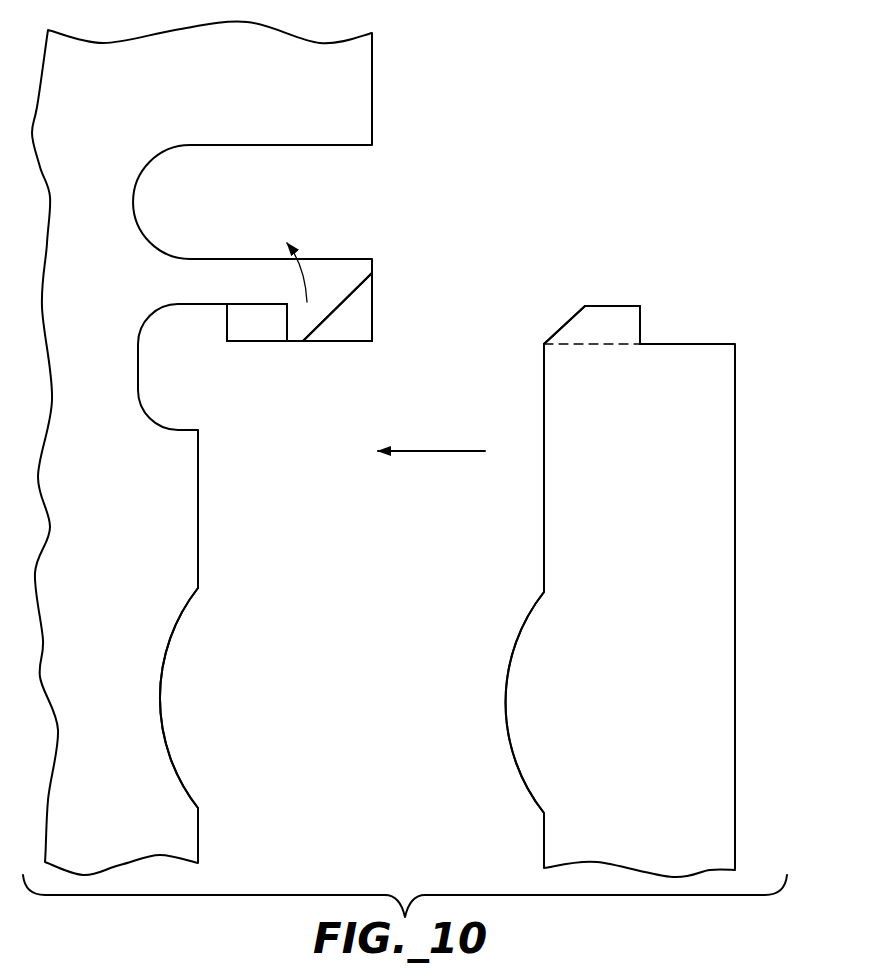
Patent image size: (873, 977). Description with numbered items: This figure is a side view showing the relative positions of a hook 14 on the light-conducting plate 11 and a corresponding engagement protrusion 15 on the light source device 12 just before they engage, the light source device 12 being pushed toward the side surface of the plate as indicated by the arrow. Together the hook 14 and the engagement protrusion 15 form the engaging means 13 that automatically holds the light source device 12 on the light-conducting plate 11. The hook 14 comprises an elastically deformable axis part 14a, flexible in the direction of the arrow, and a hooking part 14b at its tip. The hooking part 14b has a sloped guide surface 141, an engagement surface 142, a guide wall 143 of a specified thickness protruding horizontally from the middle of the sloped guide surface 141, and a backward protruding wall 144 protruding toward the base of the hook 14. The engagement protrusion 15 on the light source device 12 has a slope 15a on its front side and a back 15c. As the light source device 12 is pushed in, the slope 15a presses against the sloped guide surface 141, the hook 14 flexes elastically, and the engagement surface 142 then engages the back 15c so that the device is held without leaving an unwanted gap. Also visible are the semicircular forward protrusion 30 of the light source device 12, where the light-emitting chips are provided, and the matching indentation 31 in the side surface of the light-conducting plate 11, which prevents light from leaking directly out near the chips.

The light-conducting plate 11 is at (100, 296).
The light source device 12 is at (735, 418).
The engaging means 13 is at (598, 279).
The hook 14 is at (294, 291).
The axis part 14a is at (200, 268).
The hooking part 14b is at (332, 325).
The sloped guide surface 141 is at (373, 296).
The engagement surface 142 is at (285, 318).
The guide wall 143 is at (362, 330).
The backward protruding wall 144 is at (238, 318).
The engagement protrusion 15 is at (603, 306).
The slope 15a is at (558, 333).
The back of protrusion 15c is at (642, 332).
The forward protrusion 30 is at (506, 710).
The indentation 31 is at (162, 700).